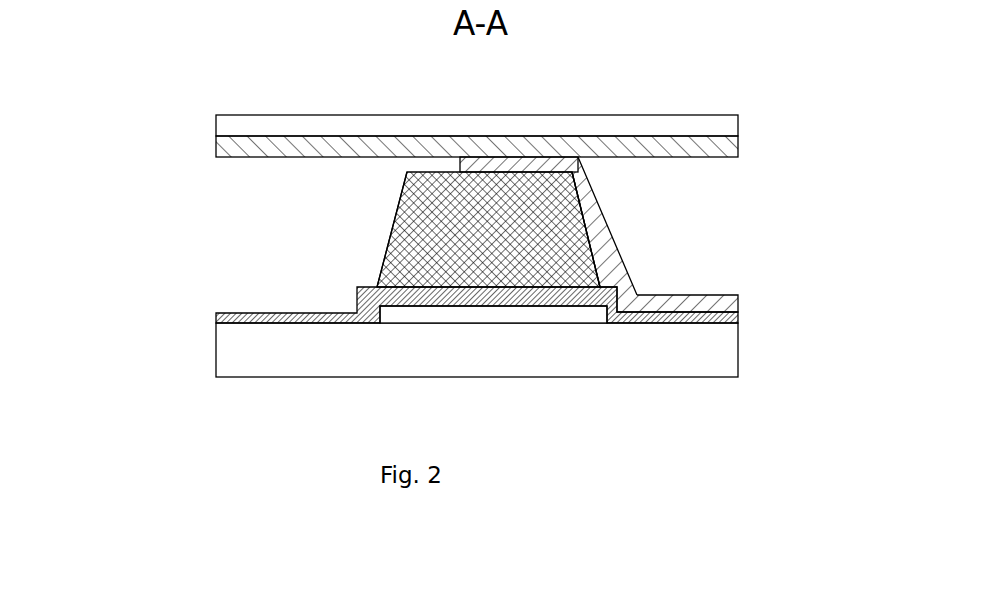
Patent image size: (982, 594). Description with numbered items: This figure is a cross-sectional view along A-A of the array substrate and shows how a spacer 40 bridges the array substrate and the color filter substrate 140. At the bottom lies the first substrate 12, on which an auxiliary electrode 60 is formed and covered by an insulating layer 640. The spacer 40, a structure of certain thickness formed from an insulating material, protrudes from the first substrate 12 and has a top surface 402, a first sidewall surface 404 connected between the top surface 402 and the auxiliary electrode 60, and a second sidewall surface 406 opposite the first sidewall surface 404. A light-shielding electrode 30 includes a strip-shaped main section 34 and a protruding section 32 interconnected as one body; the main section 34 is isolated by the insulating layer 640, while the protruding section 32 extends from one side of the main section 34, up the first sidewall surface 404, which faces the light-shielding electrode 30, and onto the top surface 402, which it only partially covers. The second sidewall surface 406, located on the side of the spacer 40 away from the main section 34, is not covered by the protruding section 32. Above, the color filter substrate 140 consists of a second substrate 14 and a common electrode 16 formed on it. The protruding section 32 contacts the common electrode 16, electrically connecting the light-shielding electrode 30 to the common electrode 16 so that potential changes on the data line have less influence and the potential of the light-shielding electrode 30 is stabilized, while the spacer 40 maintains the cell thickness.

The first substrate 12 is at (295, 358).
The auxiliary electrode 60 is at (483, 315).
The insulating layer 640 is at (565, 305).
The spacer 40 is at (403, 222).
The top surface 402 is at (493, 166).
The first sidewall surface 404 is at (587, 226).
The second sidewall surface 406 is at (384, 257).
The light-shielding electrode 30 is at (823, 150).
The protruding section 32 is at (613, 258).
The main section 34 is at (695, 303).
The color filter substrate 140 is at (110, 72).
The second substrate 14 is at (233, 125).
The common electrode 16 is at (232, 153).